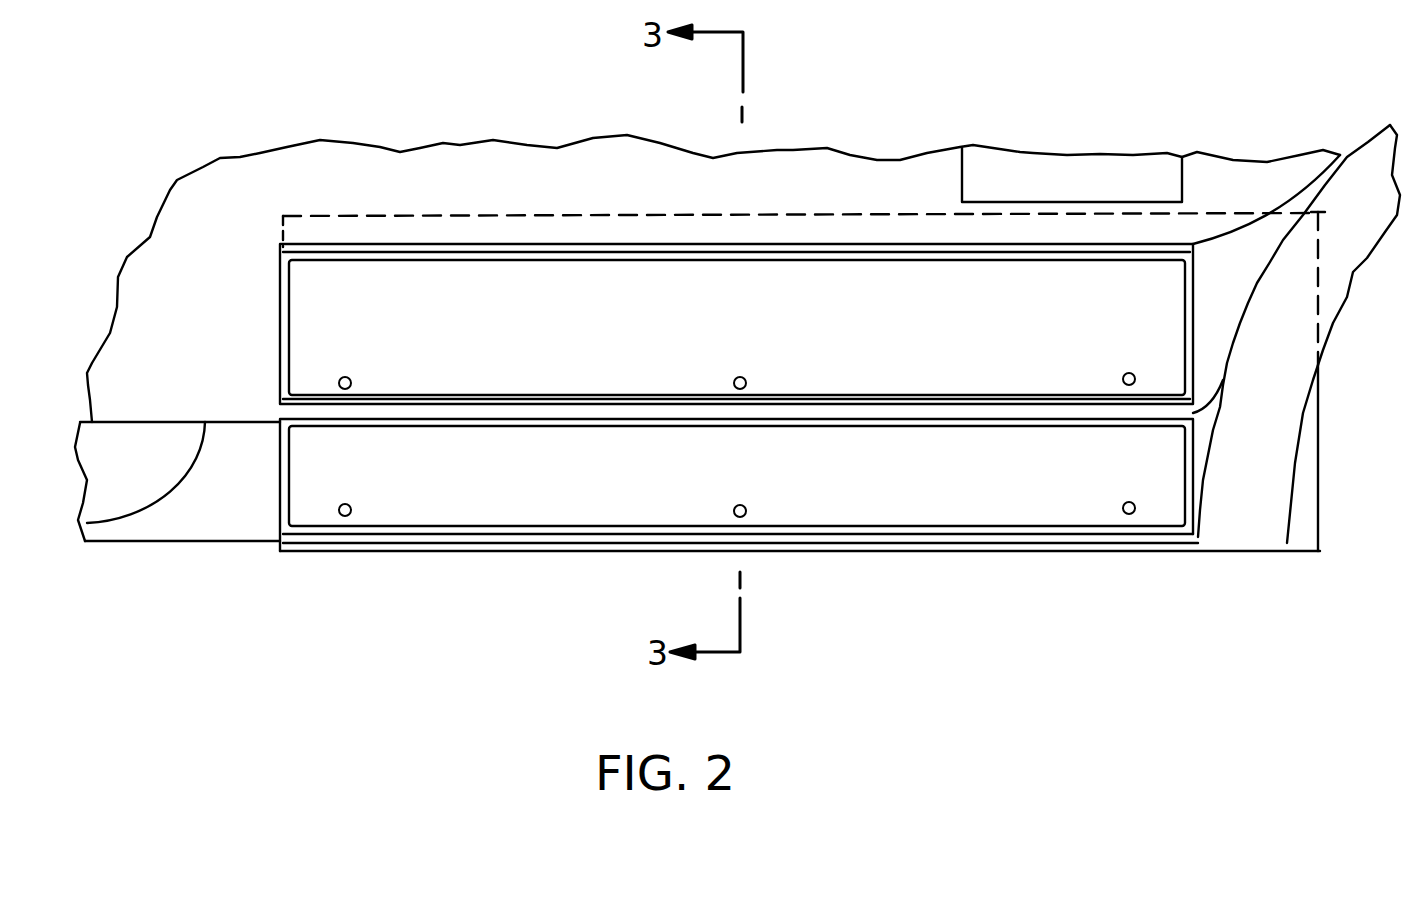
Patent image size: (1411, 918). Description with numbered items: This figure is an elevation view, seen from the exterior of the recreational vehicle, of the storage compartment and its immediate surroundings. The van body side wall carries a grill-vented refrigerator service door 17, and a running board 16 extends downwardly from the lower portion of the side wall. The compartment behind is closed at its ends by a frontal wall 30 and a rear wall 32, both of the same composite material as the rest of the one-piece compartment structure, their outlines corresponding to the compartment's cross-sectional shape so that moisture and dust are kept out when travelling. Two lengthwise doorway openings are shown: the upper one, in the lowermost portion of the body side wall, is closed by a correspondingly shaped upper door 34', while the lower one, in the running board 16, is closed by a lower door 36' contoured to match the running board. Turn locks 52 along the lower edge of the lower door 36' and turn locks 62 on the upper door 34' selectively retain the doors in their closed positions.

The running board 16 is at (233, 503).
The grill-vented refrigerator service door 17 is at (1023, 165).
The frontal wall 30 is at (276, 231).
The rear wall 32 is at (1322, 452).
The upper door 34' is at (699, 324).
The lower door 36' is at (739, 516).
The turn locks 52 is at (748, 515).
The turn locks 62 is at (351, 379).